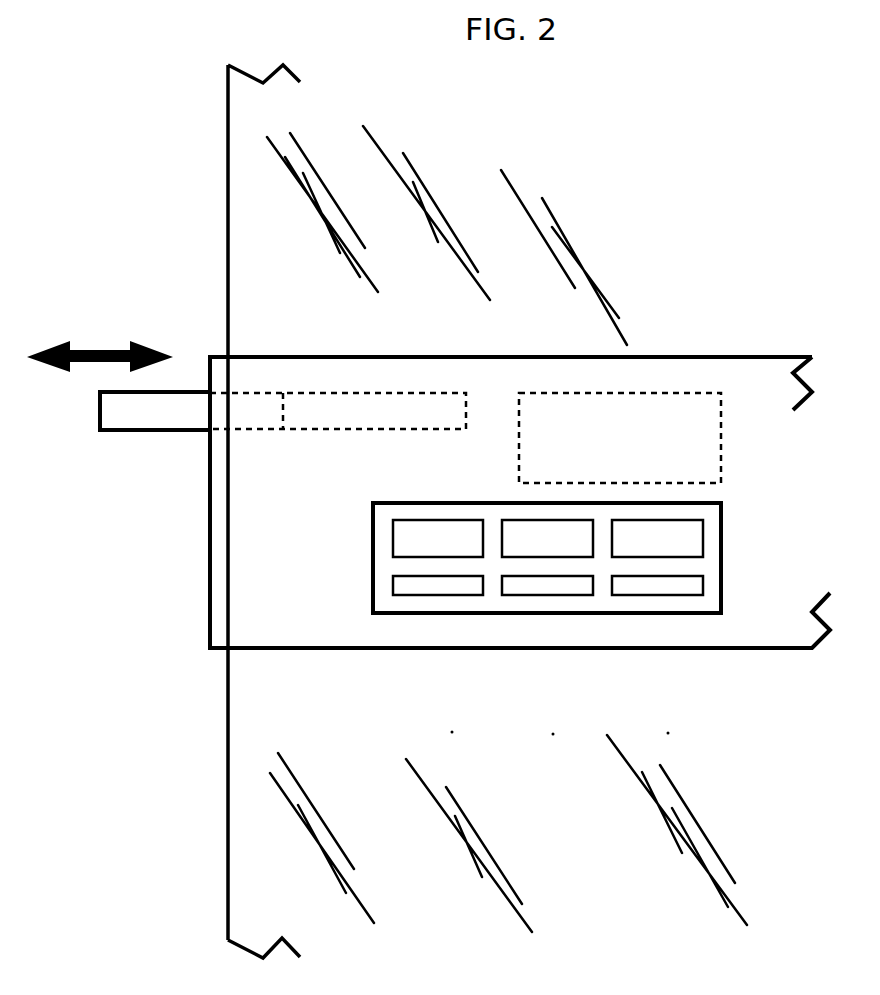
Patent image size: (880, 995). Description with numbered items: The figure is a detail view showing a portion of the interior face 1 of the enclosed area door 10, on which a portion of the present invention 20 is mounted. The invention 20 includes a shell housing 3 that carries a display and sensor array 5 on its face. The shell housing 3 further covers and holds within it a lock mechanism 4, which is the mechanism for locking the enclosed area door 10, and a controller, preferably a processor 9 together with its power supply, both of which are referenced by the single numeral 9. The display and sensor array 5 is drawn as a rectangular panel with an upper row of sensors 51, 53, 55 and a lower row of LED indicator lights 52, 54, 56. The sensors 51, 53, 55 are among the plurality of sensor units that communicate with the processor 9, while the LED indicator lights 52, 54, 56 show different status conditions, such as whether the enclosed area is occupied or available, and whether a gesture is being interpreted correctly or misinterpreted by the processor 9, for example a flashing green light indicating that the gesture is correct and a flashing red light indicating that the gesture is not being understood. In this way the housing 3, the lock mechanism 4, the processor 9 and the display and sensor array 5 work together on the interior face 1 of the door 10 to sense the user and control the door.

The interior face 1 is at (420, 264).
The shell housing 3 is at (290, 603).
The lock mechanism 4 is at (173, 417).
The display and sensor array 5 is at (718, 577).
The processor 9 is at (578, 412).
The enclosed area door 10 is at (225, 155).
The present invention 20 is at (671, 279).
The sensor 51 is at (413, 540).
The LED indicator light 52 is at (467, 587).
The sensor 53 is at (516, 545).
The LED indicator light 54 is at (573, 587).
The sensor 55 is at (627, 540).
The LED indicator light 56 is at (678, 587).